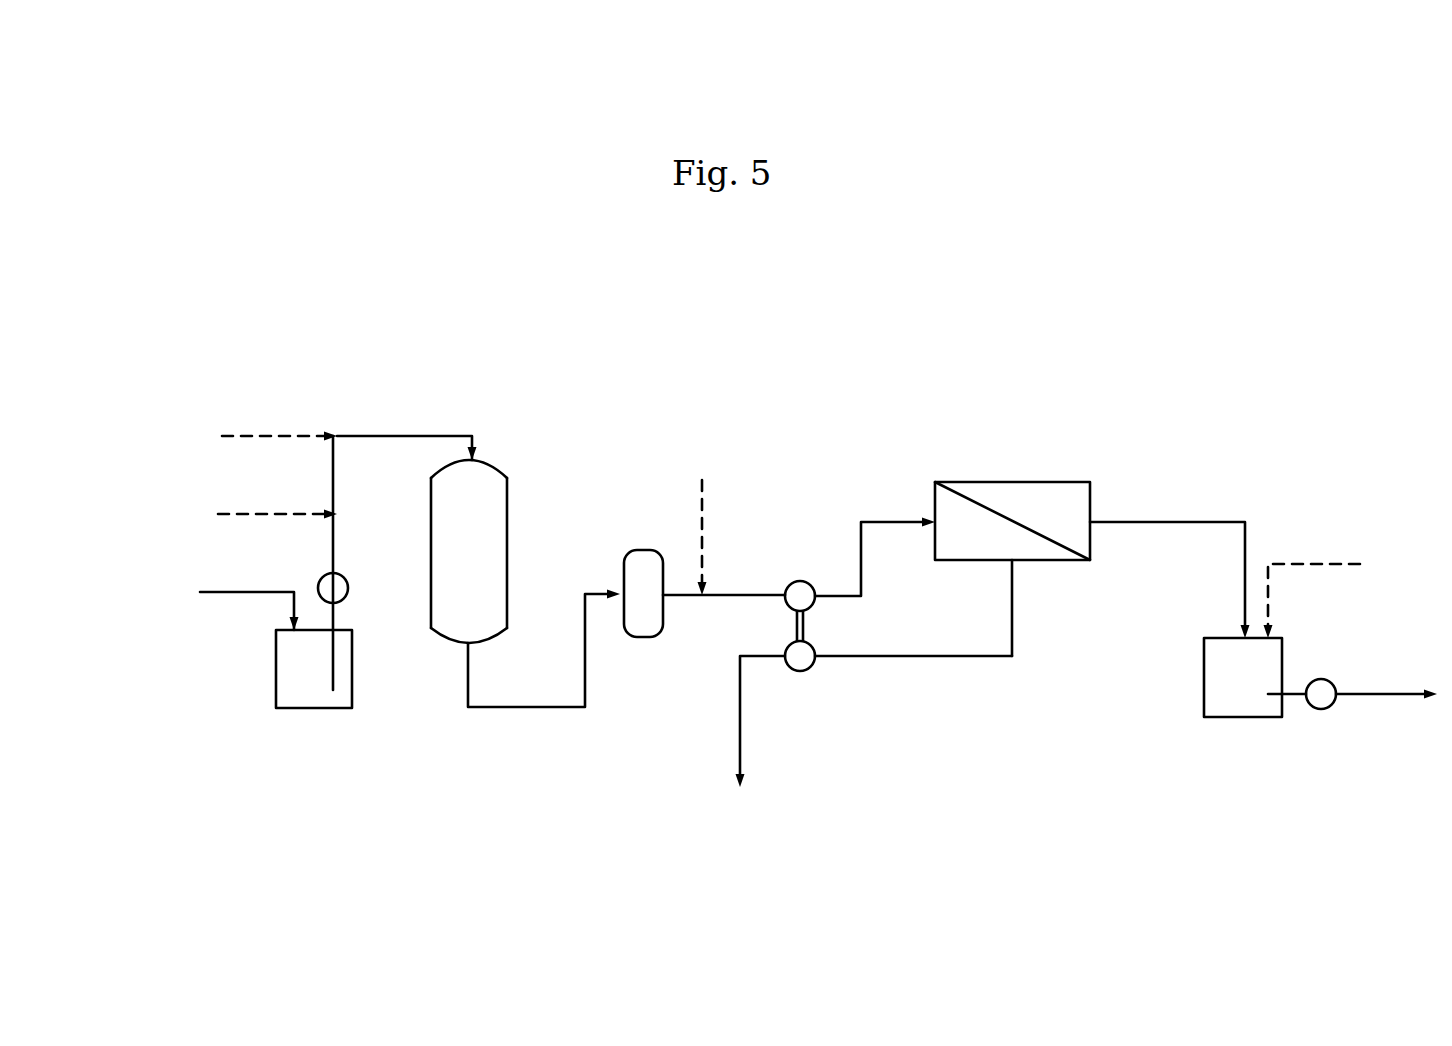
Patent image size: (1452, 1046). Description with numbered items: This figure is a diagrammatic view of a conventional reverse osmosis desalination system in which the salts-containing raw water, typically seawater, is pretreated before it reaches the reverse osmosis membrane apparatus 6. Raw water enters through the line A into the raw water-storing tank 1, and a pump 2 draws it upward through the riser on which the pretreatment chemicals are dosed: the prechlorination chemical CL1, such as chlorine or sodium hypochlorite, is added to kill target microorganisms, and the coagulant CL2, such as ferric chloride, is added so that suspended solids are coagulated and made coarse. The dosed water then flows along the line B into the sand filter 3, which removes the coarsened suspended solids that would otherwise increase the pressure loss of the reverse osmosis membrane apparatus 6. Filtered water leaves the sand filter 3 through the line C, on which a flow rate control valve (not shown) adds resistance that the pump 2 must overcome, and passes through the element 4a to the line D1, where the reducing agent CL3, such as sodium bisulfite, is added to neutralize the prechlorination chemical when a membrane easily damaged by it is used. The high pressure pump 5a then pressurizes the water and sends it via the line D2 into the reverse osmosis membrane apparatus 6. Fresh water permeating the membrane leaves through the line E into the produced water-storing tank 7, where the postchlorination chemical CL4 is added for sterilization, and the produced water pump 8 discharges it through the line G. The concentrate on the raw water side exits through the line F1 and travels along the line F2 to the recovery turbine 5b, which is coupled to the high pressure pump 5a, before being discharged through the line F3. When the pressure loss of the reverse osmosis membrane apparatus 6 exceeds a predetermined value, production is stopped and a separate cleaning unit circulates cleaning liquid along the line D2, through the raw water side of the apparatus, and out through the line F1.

The raw water-storing tank 1 is at (318, 708).
The pump 2 is at (352, 579).
The sand filter 3 is at (510, 525).
The filter / pre-treatment vessel 4a is at (653, 640).
The high pressure pump 5a is at (801, 577).
The recovery turbine 5b is at (800, 675).
The reverse osmosis membrane apparatus 6 is at (1005, 477).
The produced water-storing tank 7 is at (1243, 718).
The produced water pump 8 is at (1329, 716).
The line A is at (238, 592).
The line B is at (410, 432).
The line C is at (522, 708).
The line D1 is at (735, 592).
The line D2 is at (880, 518).
The line E is at (1155, 520).
The line F1 is at (1012, 610).
The line F2 is at (948, 660).
The line F3 is at (736, 727).
The line G is at (1373, 692).
The chemical for prechlorination CL1 is at (237, 514).
The coagulant CL2 is at (229, 435).
The reducing agent CL3 is at (694, 519).
The chemical for postchlorination CL4 is at (1344, 594).